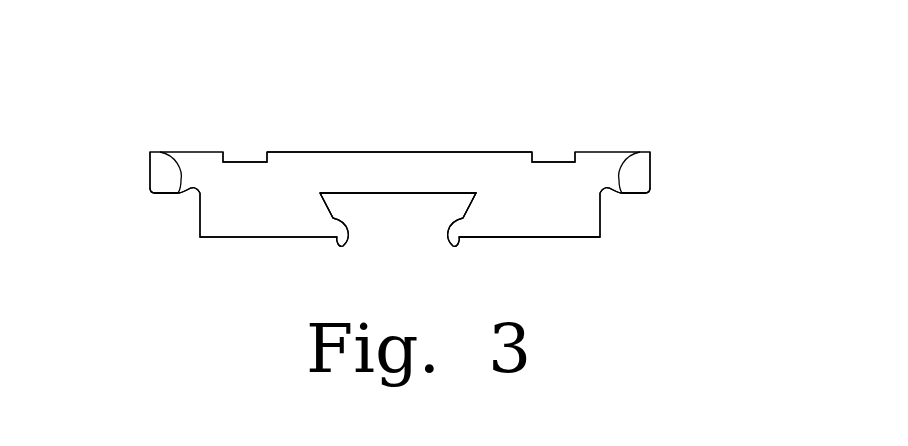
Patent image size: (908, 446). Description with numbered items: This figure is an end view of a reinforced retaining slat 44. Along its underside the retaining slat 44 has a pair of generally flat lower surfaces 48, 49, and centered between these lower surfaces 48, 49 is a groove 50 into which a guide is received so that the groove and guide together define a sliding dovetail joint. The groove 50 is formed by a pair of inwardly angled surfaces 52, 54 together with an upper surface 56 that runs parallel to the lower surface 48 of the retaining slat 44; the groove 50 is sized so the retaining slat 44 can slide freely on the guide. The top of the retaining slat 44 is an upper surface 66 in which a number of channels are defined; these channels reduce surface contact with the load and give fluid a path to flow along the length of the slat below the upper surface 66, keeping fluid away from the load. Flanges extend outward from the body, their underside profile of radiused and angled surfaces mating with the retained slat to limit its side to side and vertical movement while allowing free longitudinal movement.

The retaining slat 44 is at (783, 97).
The upper surface 66 is at (397, 152).
The lower surface 48 is at (230, 238).
The lower surface 49 is at (555, 238).
The inwardly angled surface 54 is at (340, 247).
The inwardly angled surface 52 is at (455, 247).
The groove 50 is at (405, 205).
The upper surface 56 is at (425, 195).